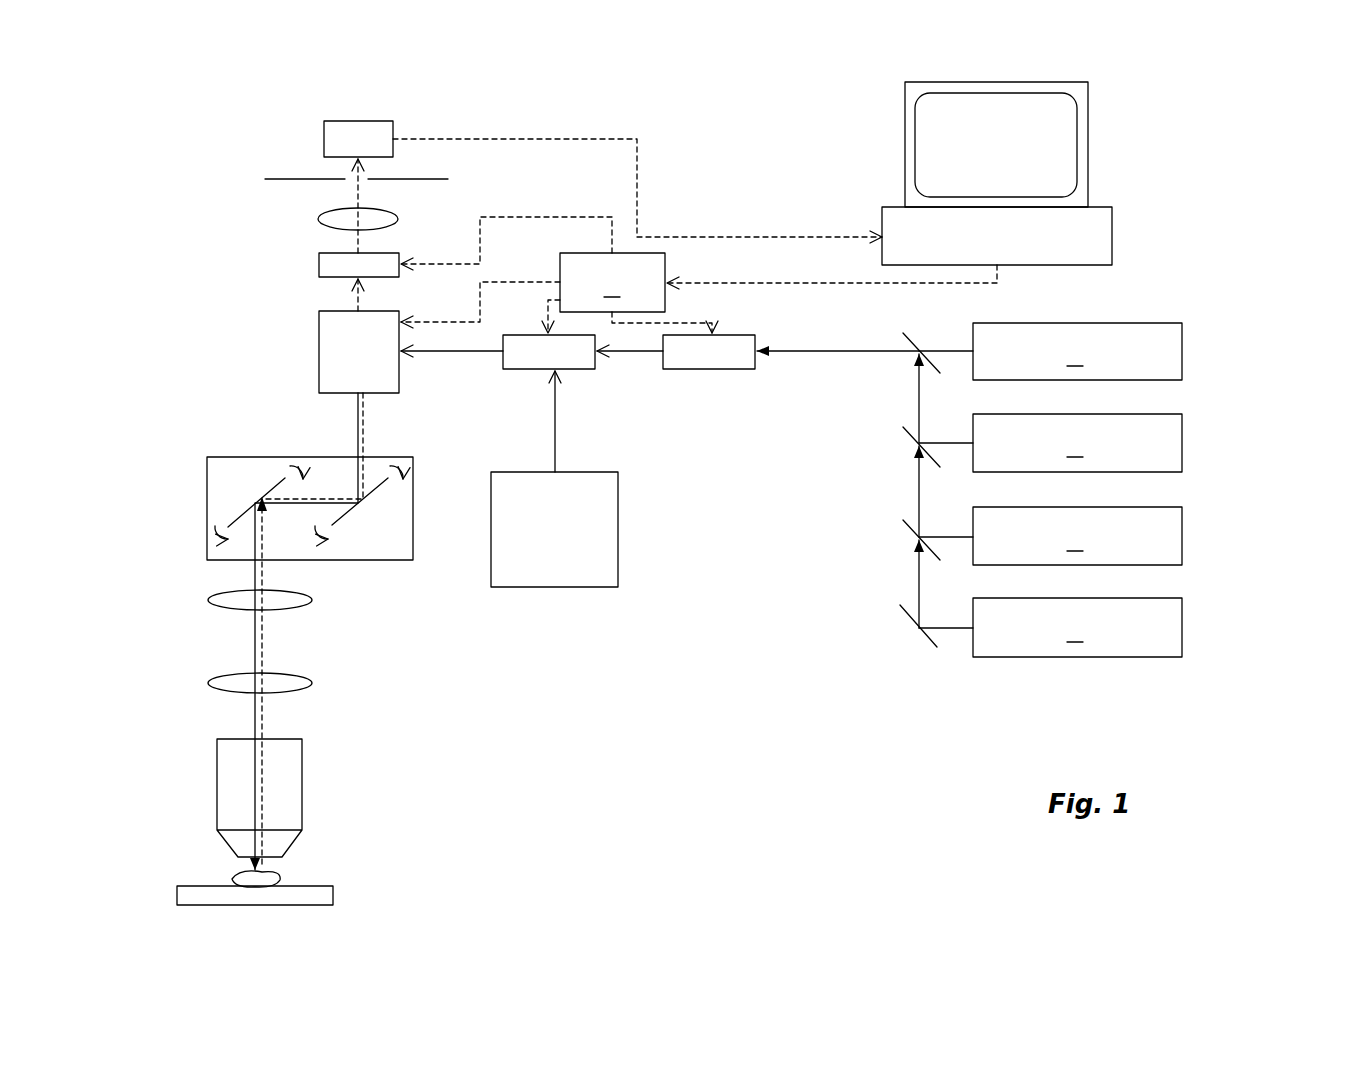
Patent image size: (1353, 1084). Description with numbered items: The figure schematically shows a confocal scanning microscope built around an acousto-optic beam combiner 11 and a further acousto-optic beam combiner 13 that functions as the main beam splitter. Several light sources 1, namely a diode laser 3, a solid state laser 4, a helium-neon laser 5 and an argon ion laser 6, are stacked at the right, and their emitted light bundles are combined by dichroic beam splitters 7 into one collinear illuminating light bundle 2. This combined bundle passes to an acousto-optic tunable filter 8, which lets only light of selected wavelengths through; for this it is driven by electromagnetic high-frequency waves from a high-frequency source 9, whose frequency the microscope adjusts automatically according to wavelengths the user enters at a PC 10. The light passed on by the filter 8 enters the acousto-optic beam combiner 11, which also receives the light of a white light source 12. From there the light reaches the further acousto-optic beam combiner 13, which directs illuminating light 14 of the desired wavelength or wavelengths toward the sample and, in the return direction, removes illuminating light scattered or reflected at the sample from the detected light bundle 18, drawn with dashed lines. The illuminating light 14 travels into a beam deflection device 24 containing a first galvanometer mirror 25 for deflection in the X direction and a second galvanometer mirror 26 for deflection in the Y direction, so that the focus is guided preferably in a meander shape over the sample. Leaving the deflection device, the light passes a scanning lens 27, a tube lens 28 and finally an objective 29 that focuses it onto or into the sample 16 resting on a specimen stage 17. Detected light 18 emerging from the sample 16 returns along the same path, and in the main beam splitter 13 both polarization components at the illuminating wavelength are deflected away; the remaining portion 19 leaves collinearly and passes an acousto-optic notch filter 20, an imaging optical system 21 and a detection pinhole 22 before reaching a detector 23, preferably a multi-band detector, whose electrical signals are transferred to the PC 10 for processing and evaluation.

The light sources 1 is at (879, 490).
The collinear illuminating light bundle 2 is at (437, 353).
The diode laser 3 is at (1050, 627).
The solid state laser 4 is at (1050, 536).
The helium-neon laser 5 is at (1050, 443).
The argon ion laser 6 is at (1050, 351).
The dichroic beam splitters 7 is at (913, 335).
The acousto-optic tunable filter 8 is at (735, 355).
The high-frequency source 9 is at (772, 293).
The PC 10 is at (1147, 183).
The acousto-optic beam combiner 11 is at (580, 360).
The white light source 12 is at (533, 565).
The further acousto-optic beam combiner 13 is at (340, 352).
The illuminating light 14 is at (358, 432).
The sample 16 is at (270, 877).
The specimen stage 17 is at (190, 890).
The detected light bundle 18 is at (265, 648).
The remaining portion of detected light bundle 19 is at (355, 190).
The acousto-optic notch filter 20 is at (330, 265).
The imaging optical system 21 is at (333, 217).
The detection pinhole 22 is at (418, 180).
The detector 23 is at (334, 135).
The beam deflection device 24 is at (403, 470).
The first galvanometer mirror 25 is at (378, 530).
The second galvanometer mirror 26 is at (237, 490).
The scanning lens 27 is at (230, 600).
The tube lens 28 is at (222, 690).
The objective 29 is at (290, 786).